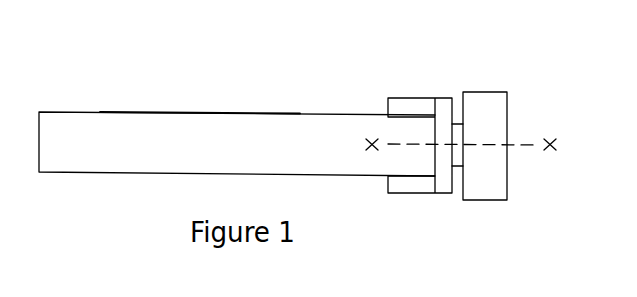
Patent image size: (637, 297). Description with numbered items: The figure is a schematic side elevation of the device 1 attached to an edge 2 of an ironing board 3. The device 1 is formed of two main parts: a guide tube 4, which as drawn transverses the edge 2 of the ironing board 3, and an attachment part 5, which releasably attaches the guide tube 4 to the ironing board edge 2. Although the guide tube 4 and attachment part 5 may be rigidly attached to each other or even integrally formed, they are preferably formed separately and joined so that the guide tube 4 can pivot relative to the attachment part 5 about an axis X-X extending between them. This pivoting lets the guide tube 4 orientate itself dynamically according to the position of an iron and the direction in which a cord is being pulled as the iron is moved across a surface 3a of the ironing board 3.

The device 1 is at (440, 65).
The edge 2 is at (432, 137).
The ironing board 3 is at (136, 133).
The surface 3a is at (193, 112).
The guide tube 4 is at (488, 211).
The attachment part 5 is at (408, 207).